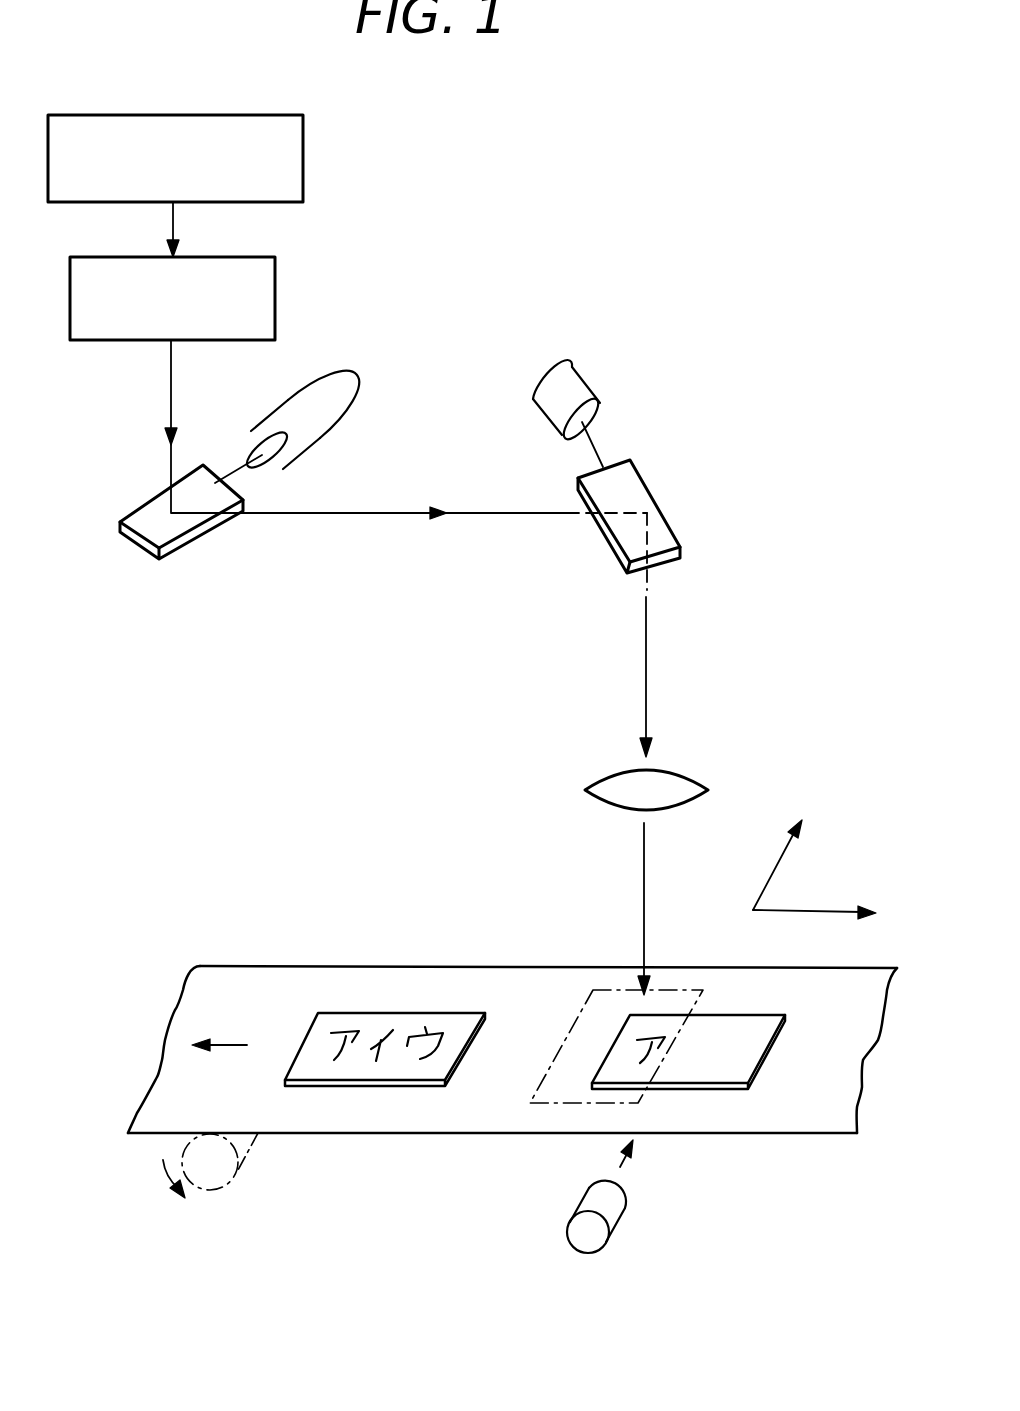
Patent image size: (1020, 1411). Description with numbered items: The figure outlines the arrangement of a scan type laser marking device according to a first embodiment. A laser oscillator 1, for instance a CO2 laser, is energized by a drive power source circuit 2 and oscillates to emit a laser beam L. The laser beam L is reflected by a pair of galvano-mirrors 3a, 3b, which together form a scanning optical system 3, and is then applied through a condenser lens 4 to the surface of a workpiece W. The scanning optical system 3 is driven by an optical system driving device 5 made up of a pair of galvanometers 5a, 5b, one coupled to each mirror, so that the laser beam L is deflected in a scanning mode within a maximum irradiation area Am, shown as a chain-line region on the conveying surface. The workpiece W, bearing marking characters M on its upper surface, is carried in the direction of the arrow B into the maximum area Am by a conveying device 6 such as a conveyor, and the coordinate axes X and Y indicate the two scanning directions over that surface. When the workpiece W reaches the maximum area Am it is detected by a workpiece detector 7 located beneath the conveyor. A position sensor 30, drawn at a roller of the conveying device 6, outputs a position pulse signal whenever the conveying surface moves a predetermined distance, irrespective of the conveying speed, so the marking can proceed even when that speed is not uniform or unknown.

The laser oscillator 1 is at (275, 295).
The drive power source circuit 2 is at (303, 145).
The scanning optical system 3 is at (400, 543).
The galvano-mirror 3a is at (210, 530).
The galvano-mirror 3b is at (575, 514).
The condenser lens 4 is at (685, 777).
The optical system driving device 5 is at (423, 400).
The galvanometer 5a is at (317, 420).
The galvanometer 5b is at (547, 417).
The conveying device 6 is at (508, 1120).
The workpiece detector 7 is at (617, 1210).
The position sensor 30 is at (223, 1167).
The laser beam L is at (170, 418).
The conveying direction arrow B is at (219, 1029).
The marking characters M is at (438, 1032).
The workpiece W is at (452, 1058).
The maximum irradiation area Am is at (590, 997).
The X axis X is at (807, 910).
The Y axis Y is at (768, 880).